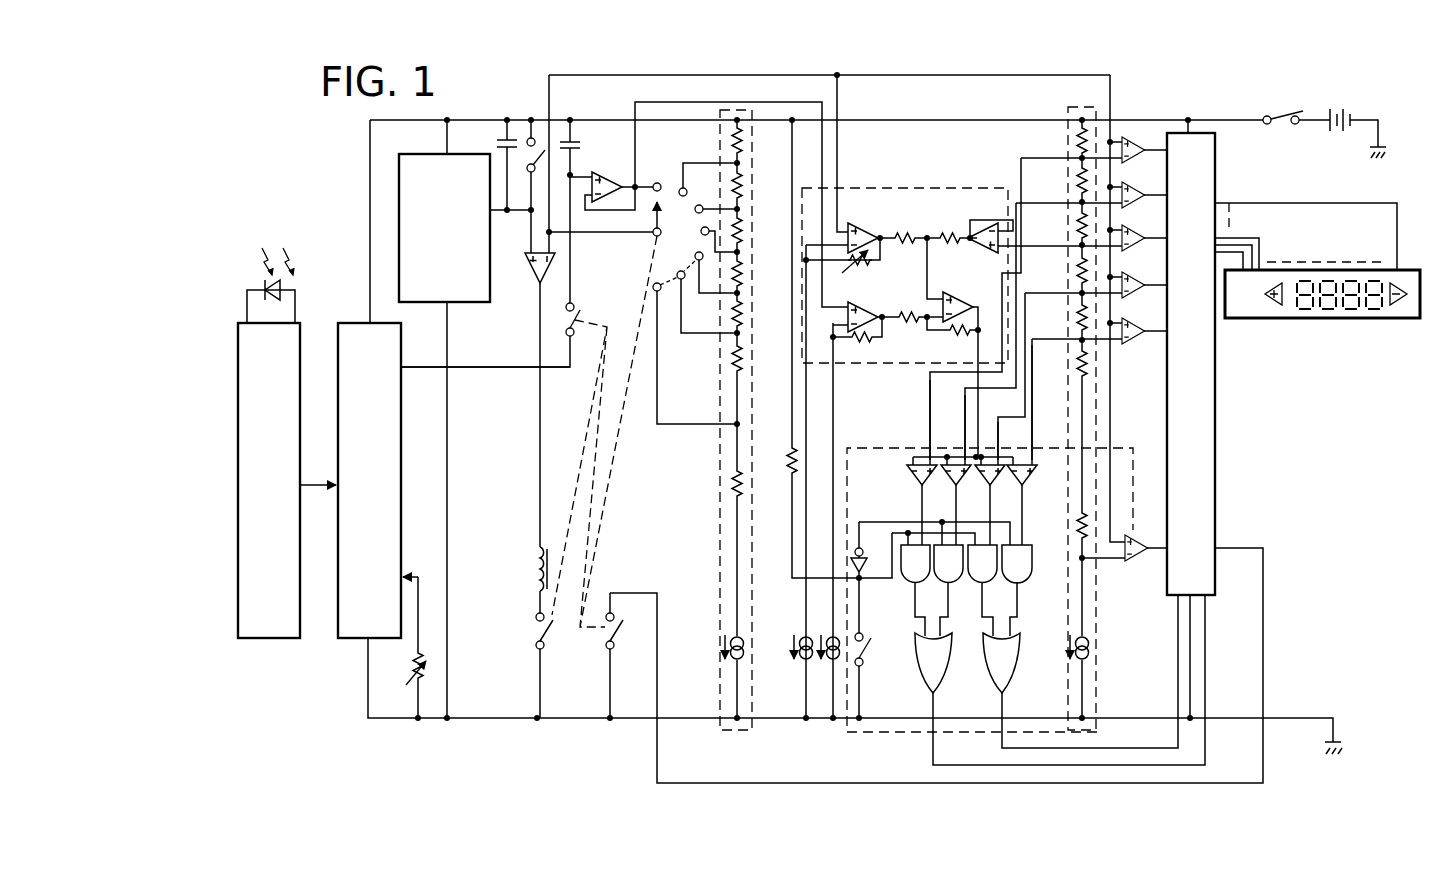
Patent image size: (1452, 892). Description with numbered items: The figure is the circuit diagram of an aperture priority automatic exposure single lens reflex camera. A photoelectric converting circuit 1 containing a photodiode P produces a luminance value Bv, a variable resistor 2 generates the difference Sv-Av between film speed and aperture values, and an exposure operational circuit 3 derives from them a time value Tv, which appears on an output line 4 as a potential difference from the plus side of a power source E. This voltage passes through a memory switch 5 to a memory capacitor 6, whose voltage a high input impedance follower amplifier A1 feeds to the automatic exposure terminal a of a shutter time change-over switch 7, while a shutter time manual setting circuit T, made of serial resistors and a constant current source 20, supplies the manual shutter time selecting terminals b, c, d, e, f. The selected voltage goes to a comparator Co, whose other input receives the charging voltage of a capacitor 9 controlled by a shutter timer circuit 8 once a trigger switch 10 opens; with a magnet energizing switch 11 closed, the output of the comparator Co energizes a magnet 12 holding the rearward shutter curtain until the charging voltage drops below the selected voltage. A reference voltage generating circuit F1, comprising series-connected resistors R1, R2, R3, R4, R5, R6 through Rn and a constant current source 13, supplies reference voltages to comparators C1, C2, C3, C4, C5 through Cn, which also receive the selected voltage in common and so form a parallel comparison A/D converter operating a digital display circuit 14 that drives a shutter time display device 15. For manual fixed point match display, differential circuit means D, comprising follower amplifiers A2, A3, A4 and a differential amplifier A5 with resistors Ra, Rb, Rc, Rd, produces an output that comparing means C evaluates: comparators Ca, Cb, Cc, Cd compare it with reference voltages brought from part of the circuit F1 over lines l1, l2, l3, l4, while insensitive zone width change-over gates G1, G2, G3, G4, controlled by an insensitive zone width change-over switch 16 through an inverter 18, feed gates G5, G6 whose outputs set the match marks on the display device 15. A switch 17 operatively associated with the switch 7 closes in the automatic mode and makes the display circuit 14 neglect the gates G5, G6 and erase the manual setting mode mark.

The photoelectric converting circuit 1 is at (272, 640).
The variable resistor 2 is at (412, 665).
The exposure operational circuit 3 is at (353, 323).
The output line 4 is at (488, 368).
The memory switch 5 is at (578, 308).
The memory capacitor 6 is at (582, 150).
The shutter time change-over switch 7 is at (676, 236).
The shutter timer circuit 8 is at (469, 303).
The capacitor 9 is at (496, 143).
The trigger switch 10 is at (536, 174).
The magnet energizing switch 11 is at (534, 633).
The magnet 12 is at (532, 571).
The constant current source 13 is at (1091, 649).
The digital display circuit 14 is at (1215, 482).
The shutter time display device 15 is at (1326, 318).
The insensitive zone width change-over switch 16 is at (870, 650).
The switch 17 is at (606, 647).
The inverter 18 is at (864, 580).
The constant current source 20 is at (742, 645).
The photodiode P is at (283, 283).
The luminance value Bv is at (318, 489).
The time value Tv is at (418, 368).
The difference between speed value and aperture value Sv-Av is at (411, 577).
The comparator Co is at (526, 266).
The follower amplifier A1 is at (613, 170).
The shutter time manual setting circuit T is at (733, 420).
The differential circuit means D is at (962, 299).
The follower amplifier A2 is at (866, 228).
The follower amplifier A3 is at (982, 250).
The follower amplifier A4 is at (868, 306).
The differential amplifier A5 is at (954, 302).
The resistor Ra is at (950, 234).
The resistor Rb is at (906, 234).
The resistor Rc is at (908, 300).
The resistor Rd is at (944, 334).
The reference voltage generating circuit F1 is at (1057, 410).
The resistor R1 is at (1074, 138).
The resistor R2 is at (1076, 180).
The resistor R3 is at (1076, 222).
The resistor R4 is at (1076, 265).
The resistor R5 is at (1076, 313).
The resistor R6 is at (1076, 360).
The resistor Rn is at (1076, 528).
The comparator C1 is at (1134, 156).
The comparator C2 is at (1134, 201).
The comparator C3 is at (1134, 242).
The comparator C4 is at (1134, 292).
The comparator C5 is at (1130, 344).
The comparator Cn is at (1132, 564).
The comparing means C is at (990, 617).
The comparator Ca is at (914, 480).
The comparator Cb is at (950, 480).
The comparator Cc is at (984, 480).
The comparator Cd is at (1016, 480).
The line l1 is at (930, 400).
The line l2 is at (965, 414).
The line l3 is at (1004, 418).
The line l4 is at (1032, 422).
The insensitive zone width change-over gate G1 is at (915, 590).
The insensitive zone width change-over gate G2 is at (948, 590).
The insensitive zone width change-over gate G3 is at (982, 590).
The insensitive zone width change-over gate G4 is at (1017, 590).
The gate G5 is at (933, 663).
The gate G6 is at (1001, 663).
The power source E is at (1336, 130).
The automatic exposure terminal a is at (654, 183).
The manual shutter time selecting terminal b is at (680, 188).
The manual shutter time selecting terminal c is at (698, 205).
The manual shutter time selecting terminal d is at (701, 233).
The switch contact e is at (702, 260).
The switch contact f is at (684, 279).